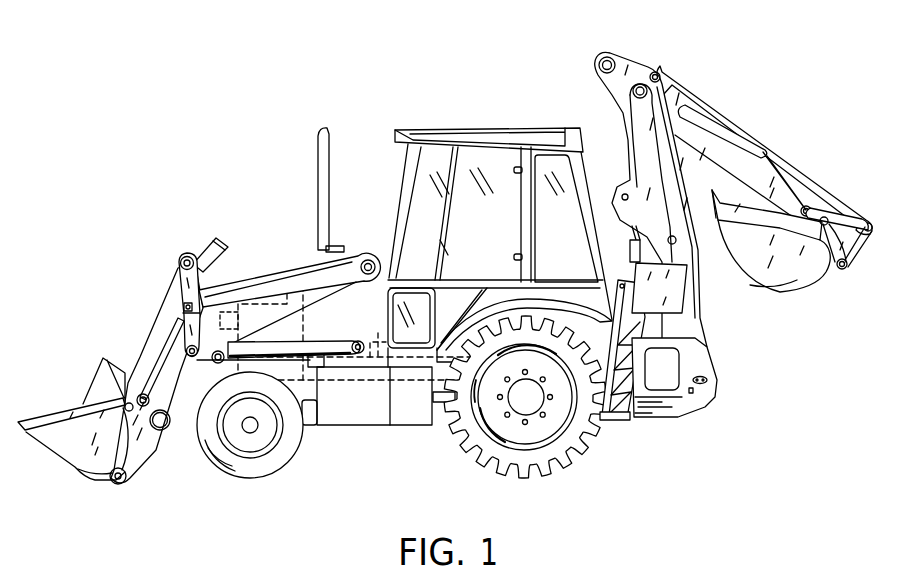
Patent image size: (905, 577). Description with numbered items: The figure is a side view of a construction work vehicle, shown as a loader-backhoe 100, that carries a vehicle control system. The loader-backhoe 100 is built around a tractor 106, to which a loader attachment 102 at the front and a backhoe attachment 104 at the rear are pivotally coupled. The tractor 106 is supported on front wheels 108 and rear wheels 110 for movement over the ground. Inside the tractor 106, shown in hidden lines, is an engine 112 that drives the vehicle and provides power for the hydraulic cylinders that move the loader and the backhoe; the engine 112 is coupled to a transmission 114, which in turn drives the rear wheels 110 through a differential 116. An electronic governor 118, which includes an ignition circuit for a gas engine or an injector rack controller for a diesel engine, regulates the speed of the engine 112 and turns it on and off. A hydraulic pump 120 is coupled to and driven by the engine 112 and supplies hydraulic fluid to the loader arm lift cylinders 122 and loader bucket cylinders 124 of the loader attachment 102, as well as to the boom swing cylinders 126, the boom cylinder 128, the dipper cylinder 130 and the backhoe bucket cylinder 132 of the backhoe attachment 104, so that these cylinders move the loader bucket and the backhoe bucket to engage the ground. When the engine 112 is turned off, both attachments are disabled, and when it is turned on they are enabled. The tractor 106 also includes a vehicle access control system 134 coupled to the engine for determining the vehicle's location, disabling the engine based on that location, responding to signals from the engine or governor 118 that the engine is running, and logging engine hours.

The loader-backhoe 100 is at (454, 96).
The loader attachment 102 is at (88, 301).
The backhoe attachment 104 is at (718, 113).
The tractor 106 is at (397, 178).
The front wheels 108 is at (263, 472).
The rear wheels 110 is at (558, 470).
The engine 112 is at (247, 268).
The transmission 114 is at (363, 382).
The differential 116 is at (493, 466).
The electronic governor 118 is at (288, 272).
The hydraulic pump 120 is at (205, 318).
The loader arm lift cylinders 122 is at (240, 338).
The loader bucket cylinders 124 is at (178, 322).
The boom swing cylinders 126 is at (640, 417).
The boom cylinder 128 is at (623, 223).
The dipper cylinder 130 is at (597, 112).
The backhoe bucket cylinder 132 is at (792, 167).
The vehicle access control system 134 is at (381, 342).